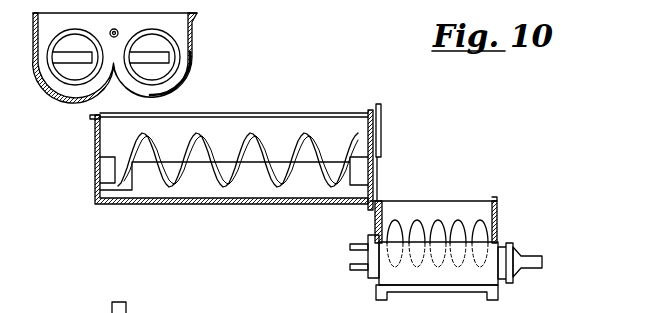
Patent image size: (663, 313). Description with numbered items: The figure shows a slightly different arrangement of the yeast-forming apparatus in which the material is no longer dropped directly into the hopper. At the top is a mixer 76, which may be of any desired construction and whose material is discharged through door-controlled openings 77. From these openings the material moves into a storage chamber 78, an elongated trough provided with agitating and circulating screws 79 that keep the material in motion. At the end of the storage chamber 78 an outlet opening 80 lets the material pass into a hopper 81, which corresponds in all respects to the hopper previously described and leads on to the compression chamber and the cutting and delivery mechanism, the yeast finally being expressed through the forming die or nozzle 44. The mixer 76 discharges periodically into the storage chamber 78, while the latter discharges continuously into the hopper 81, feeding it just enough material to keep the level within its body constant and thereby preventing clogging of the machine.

The forming die or nozzle 44 is at (528, 261).
The mixer 76 is at (197, 32).
The door-controlled openings 77 is at (191, 72).
The storage chamber 78 is at (296, 127).
The agitating and circulating screws 79 is at (246, 143).
The outlet opening 80 is at (371, 172).
The hopper 81 is at (477, 191).